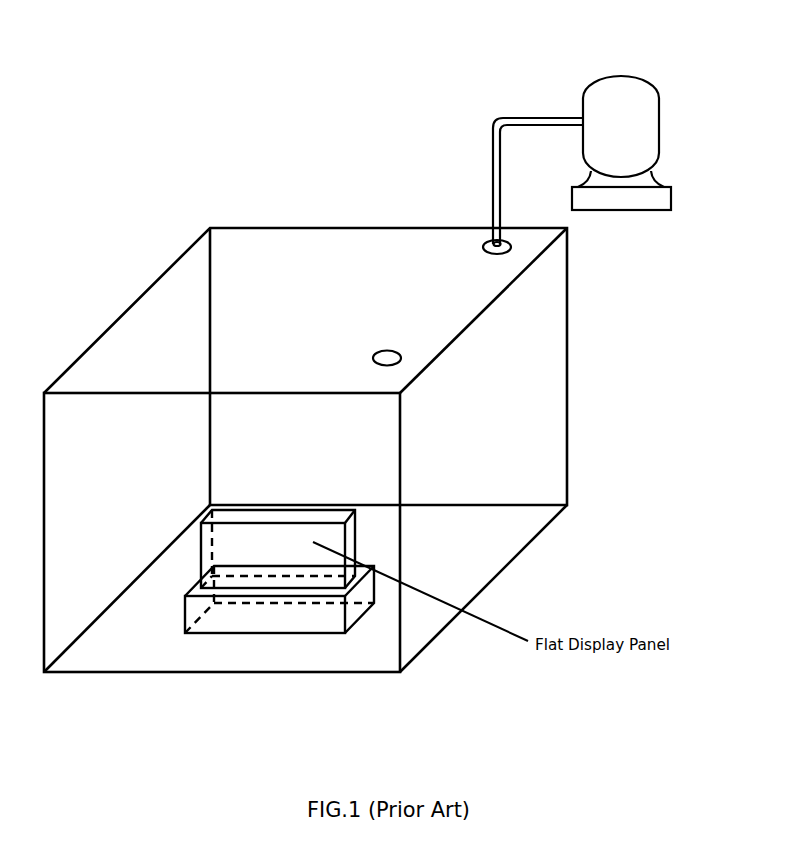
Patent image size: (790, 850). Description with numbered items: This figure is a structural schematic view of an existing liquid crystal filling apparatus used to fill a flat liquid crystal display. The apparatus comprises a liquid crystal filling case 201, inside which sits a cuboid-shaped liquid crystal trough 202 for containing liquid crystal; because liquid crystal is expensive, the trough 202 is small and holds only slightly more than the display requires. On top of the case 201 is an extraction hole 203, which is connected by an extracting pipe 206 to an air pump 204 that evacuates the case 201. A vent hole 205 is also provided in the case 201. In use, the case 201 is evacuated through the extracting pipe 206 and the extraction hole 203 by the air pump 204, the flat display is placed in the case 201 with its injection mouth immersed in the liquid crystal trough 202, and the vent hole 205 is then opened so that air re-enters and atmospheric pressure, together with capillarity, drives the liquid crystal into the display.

The liquid crystal filling case 201 is at (565, 412).
The liquid crystal trough 202 is at (348, 623).
The extraction hole 203 is at (482, 237).
The air pump 204 is at (643, 83).
The vent hole 205 is at (378, 349).
The extracting pipe 206 is at (538, 118).